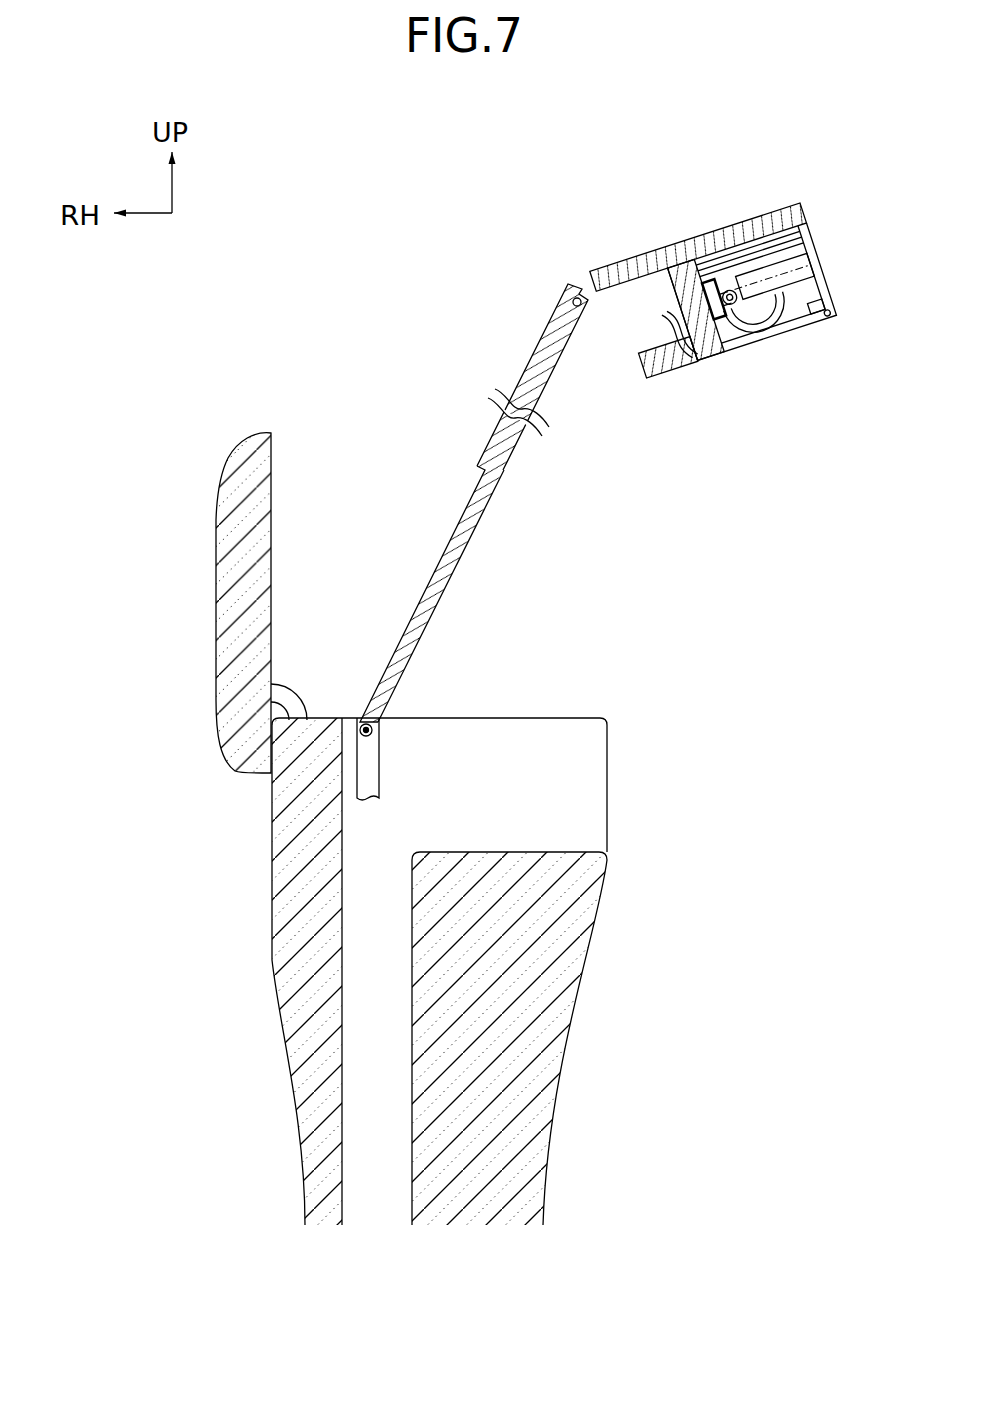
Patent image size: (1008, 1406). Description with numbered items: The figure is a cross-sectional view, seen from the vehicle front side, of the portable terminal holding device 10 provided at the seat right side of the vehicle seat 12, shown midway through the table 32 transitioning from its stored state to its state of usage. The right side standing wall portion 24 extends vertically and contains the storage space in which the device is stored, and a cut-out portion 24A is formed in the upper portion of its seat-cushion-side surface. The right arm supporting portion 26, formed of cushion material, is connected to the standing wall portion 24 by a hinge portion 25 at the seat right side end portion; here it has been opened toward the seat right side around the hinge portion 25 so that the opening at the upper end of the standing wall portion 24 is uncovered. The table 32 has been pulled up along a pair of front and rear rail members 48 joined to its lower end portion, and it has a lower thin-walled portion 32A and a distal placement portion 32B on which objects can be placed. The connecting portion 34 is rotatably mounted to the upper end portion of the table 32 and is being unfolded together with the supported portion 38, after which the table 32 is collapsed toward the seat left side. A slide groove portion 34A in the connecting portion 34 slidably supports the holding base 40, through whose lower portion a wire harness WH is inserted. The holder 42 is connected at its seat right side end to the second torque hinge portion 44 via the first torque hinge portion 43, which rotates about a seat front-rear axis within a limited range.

The portable terminal holding device 10 is at (522, 273).
The vehicle seat 12 is at (357, 273).
The right side standing wall portion 24 is at (580, 997).
The cut-out portion 24A is at (606, 850).
The hinge portion 25 is at (303, 700).
The right arm supporting portion 26 is at (232, 462).
The table 32 is at (455, 528).
The thin-walled portion 32A is at (447, 582).
The placement portion 32B is at (524, 363).
The connecting portion 34 is at (621, 260).
The slide groove portion 34A is at (763, 250).
The supported portion 38 is at (668, 373).
The holding base 40 is at (716, 358).
The holder 42 is at (788, 258).
The first torque hinge portion 43 is at (709, 281).
The second torque hinge portion 44 is at (722, 312).
The rail members 48 is at (380, 755).
The wire harness WH is at (774, 318).